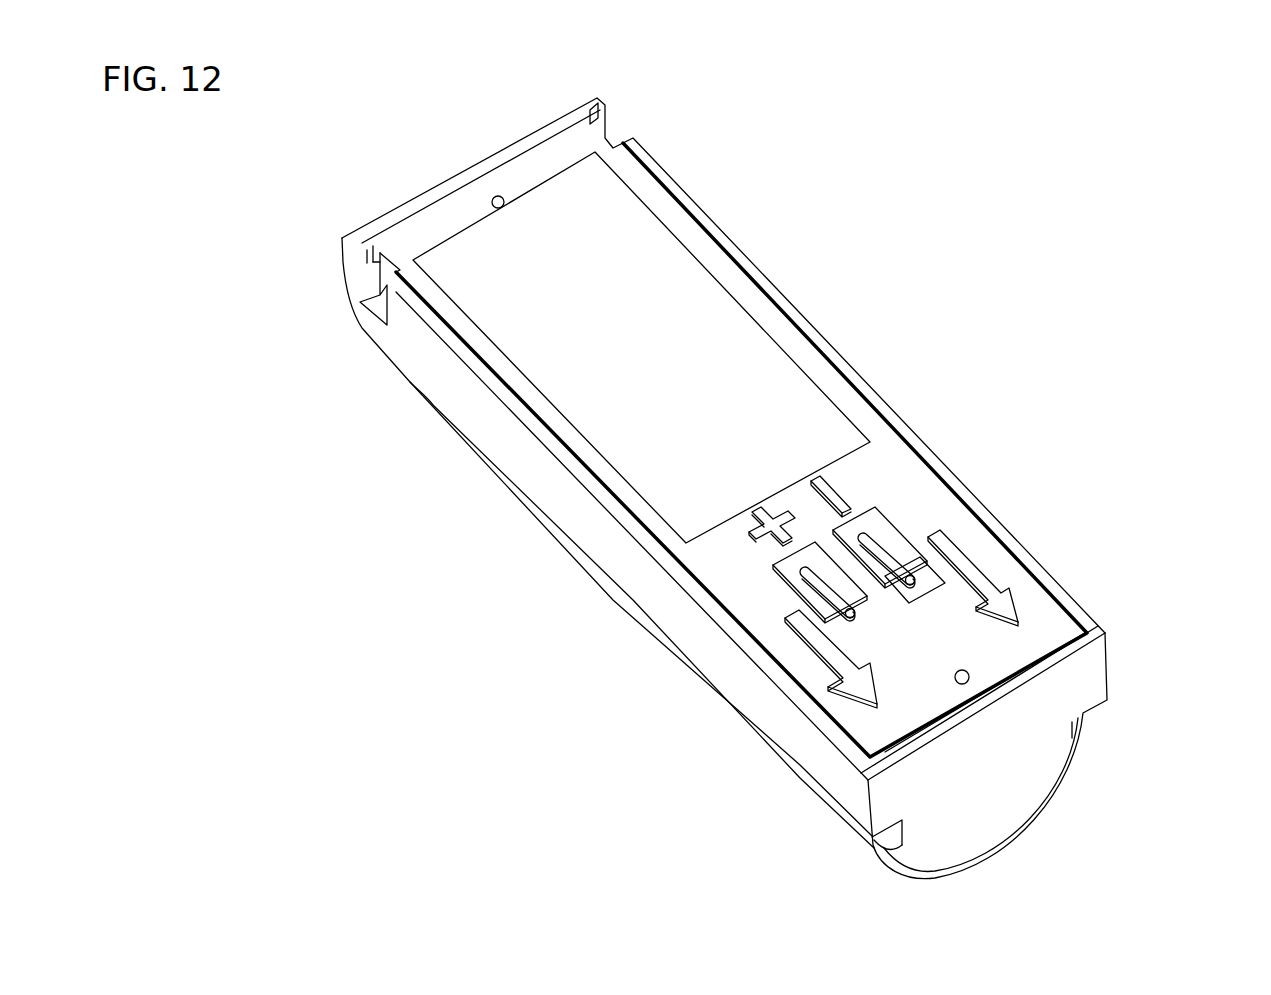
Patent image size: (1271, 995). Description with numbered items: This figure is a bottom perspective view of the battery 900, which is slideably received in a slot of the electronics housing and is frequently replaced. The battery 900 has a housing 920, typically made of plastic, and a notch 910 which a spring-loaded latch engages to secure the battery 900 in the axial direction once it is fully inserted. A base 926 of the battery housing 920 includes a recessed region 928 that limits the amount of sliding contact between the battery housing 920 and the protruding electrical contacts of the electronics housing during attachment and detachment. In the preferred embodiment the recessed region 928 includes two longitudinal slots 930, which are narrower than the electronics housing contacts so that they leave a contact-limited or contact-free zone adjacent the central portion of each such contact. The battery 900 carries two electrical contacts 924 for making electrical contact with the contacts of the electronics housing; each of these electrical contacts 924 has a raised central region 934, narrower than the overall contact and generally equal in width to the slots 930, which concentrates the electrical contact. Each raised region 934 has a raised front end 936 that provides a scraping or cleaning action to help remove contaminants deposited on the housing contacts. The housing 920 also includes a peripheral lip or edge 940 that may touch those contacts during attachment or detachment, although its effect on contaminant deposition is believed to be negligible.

The battery 900 is at (391, 193).
The notch 910 is at (376, 287).
The housing 920 is at (730, 278).
The electrical contacts 924 is at (873, 528).
The base 926 is at (880, 460).
The recessed region 928 is at (943, 660).
The longitudinal slots 930 is at (1000, 668).
The raised central region 934 is at (890, 562).
The raised front end 936 is at (912, 578).
The peripheral lip or edge 940 is at (985, 697).